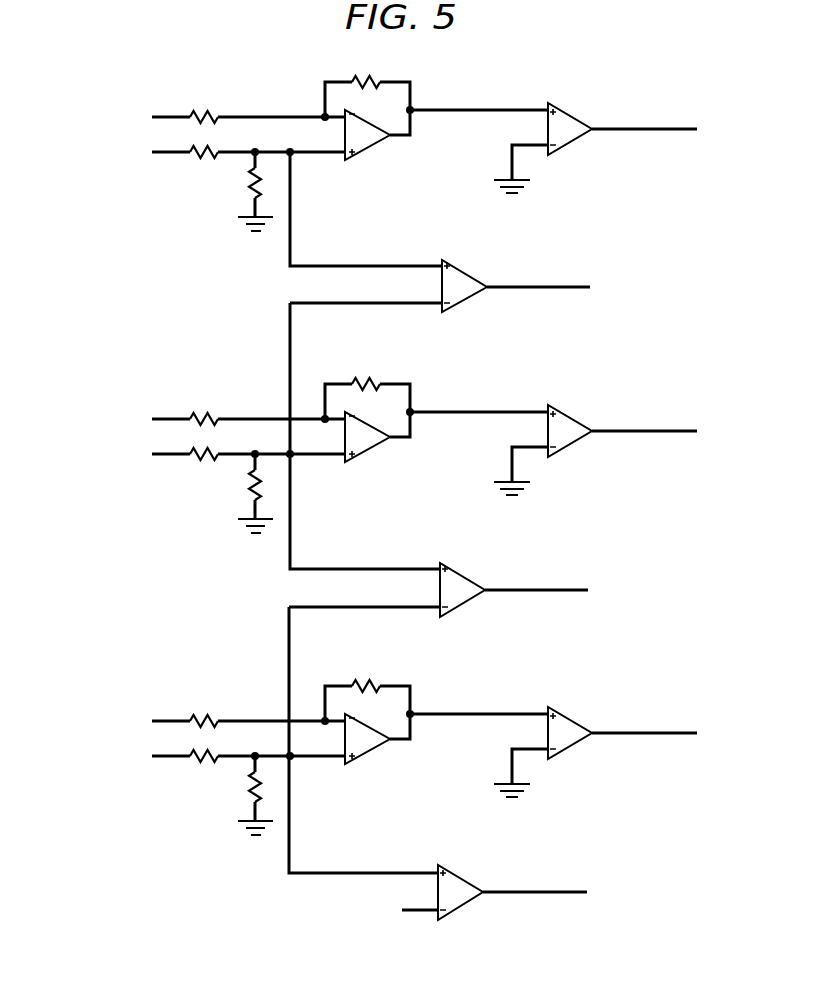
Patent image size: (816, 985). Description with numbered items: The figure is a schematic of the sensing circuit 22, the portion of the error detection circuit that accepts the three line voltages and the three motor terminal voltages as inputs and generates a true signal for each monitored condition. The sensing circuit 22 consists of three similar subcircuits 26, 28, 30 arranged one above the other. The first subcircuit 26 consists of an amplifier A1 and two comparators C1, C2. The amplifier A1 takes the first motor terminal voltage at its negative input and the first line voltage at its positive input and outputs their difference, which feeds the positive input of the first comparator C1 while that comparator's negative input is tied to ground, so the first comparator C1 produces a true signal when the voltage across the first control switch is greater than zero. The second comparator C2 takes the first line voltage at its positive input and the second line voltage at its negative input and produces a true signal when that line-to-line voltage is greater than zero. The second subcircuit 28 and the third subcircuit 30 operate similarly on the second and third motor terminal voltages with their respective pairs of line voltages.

The sensing circuit 22 is at (310, 951).
The first subcircuit 26 is at (168, 210).
The second subcircuit 28 is at (400, 567).
The third subcircuit 30 is at (400, 800).
The amplifier A1 is at (372, 150).
The first comparator C1 is at (566, 148).
The second comparator C2 is at (463, 306).